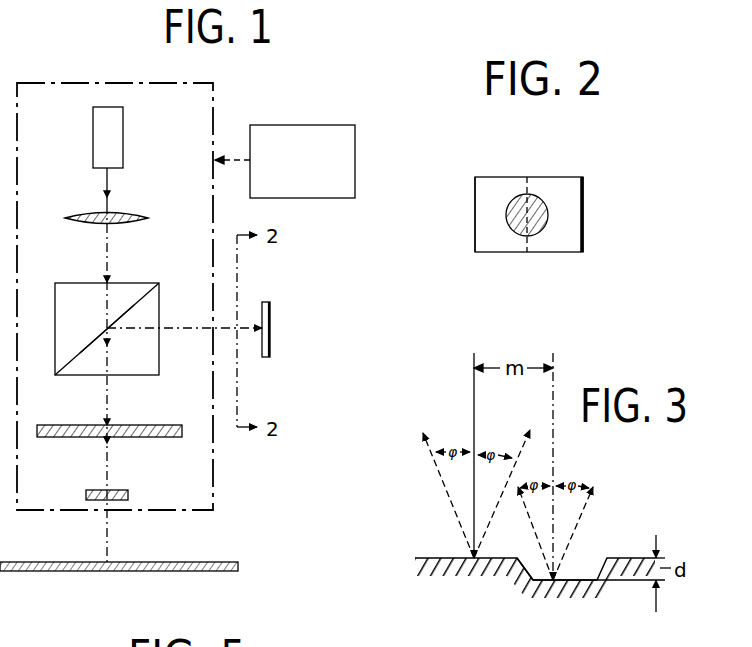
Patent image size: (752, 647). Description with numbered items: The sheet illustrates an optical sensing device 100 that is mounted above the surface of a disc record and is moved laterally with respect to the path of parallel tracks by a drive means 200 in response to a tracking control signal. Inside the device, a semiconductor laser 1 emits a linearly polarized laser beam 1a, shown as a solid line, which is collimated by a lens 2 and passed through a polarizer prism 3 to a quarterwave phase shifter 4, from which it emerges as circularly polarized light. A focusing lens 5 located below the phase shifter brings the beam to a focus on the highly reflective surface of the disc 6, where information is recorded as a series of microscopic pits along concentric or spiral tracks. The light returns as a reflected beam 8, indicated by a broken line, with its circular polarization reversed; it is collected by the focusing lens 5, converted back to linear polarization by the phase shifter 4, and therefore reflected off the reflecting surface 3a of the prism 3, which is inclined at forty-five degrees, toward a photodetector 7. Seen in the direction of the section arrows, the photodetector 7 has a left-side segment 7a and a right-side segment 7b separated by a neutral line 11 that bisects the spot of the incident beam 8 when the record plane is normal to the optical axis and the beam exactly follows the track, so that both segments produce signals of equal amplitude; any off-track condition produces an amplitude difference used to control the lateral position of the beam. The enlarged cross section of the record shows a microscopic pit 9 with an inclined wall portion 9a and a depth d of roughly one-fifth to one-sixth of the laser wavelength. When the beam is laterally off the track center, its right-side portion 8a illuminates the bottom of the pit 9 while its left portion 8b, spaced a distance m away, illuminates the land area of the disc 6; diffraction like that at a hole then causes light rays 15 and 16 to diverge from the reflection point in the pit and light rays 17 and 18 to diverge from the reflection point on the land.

In FIG. 1, the optical sensing device 100 is at (28, 83).
In FIG. 1, the drive means 200 is at (283, 125).
In FIG. 1, the semiconductor laser 1 is at (123, 132).
In FIG. 1, the laser beam 1a is at (101, 190).
In FIG. 1, the lens 2 is at (142, 213).
In FIG. 1, the polarizer prism 3 is at (159, 283).
In FIG. 1, the reflecting surface 3a is at (92, 343).
In FIG. 1, the quarterwave phase shifter 4 is at (158, 425).
In FIG. 1, the focusing lens 5 is at (124, 490).
In FIG. 1, the disc 6 is at (198, 562).
In FIG. 3, the disc 6 is at (430, 558).
In FIG. 1, the photodetector 7 is at (271, 312).
In FIG. 2, the photodetector 7 is at (570, 177).
In FIG. 2, the left-side segment 7a is at (491, 252).
In FIG. 2, the right-side segment 7b is at (568, 252).
In FIG. 1, the reflected beam 8 is at (213, 328).
In FIG. 2, the reflected beam 8 is at (538, 194).
In FIG. 3, the right-side portion of the beam 8a is at (553, 408).
In FIG. 3, the left portion of the beam 8b is at (474, 408).
In FIG. 3, the microscopic pit 9 is at (580, 580).
In FIG. 3, the inclined wall portion 9a is at (527, 580).
In FIG. 2, the line 11 is at (527, 246).
In FIG. 3, the light ray 15 is at (534, 527).
In FIG. 3, the light ray 16 is at (592, 490).
In FIG. 3, the light ray 17 is at (436, 462).
In FIG. 3, the light ray 18 is at (523, 446).